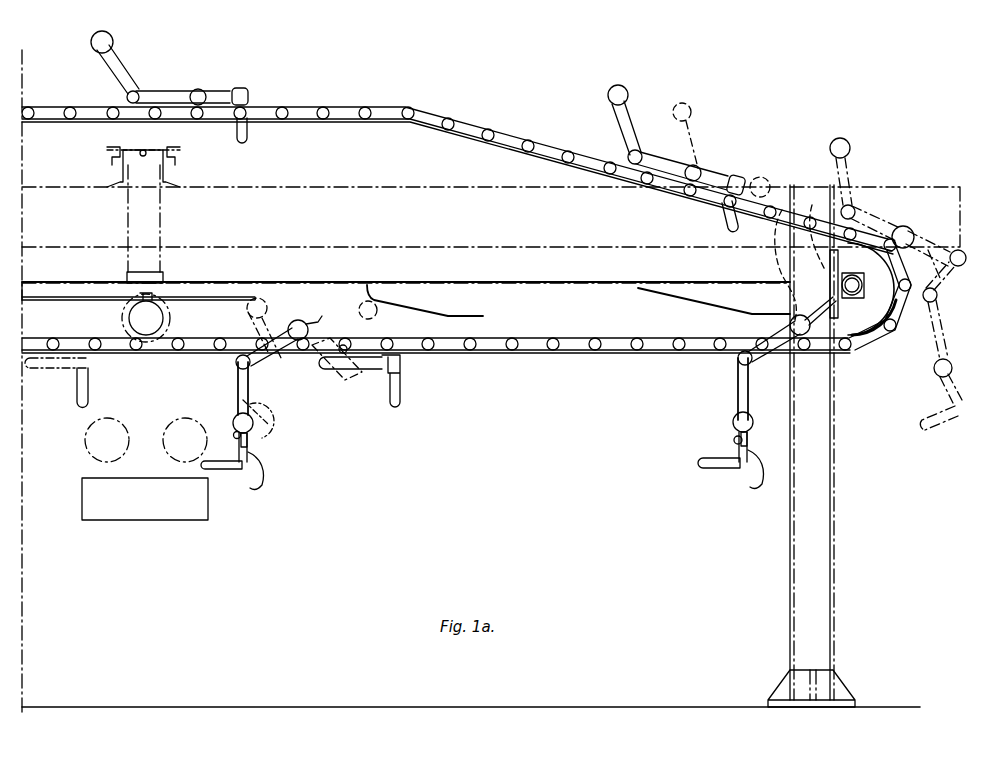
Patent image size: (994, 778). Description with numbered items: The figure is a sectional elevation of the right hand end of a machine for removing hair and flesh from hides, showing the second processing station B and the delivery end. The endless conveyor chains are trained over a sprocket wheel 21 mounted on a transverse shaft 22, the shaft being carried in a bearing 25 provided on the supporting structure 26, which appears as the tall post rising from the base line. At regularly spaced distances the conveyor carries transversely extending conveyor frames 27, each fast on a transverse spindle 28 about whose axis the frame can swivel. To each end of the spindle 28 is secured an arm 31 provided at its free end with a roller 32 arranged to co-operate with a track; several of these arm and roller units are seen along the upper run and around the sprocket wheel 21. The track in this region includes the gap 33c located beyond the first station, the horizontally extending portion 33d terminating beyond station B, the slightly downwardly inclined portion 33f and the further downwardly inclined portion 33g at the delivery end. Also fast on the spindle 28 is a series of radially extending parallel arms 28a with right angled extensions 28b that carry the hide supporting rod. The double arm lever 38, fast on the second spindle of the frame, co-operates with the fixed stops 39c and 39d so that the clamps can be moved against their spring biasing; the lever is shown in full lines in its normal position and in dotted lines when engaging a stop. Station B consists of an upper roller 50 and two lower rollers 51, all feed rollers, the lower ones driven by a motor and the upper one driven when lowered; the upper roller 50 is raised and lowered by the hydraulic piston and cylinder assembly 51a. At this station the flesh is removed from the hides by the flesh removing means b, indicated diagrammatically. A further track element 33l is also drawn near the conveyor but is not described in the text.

The drum 21 is at (882, 330).
The bearing 22 is at (862, 285).
The pin link 25 is at (850, 296).
The post 26 is at (825, 386).
The pendulum arm 27 is at (110, 70).
The pivot 28 is at (238, 366).
The hanging arm 28a is at (252, 380).
The rod 28b is at (218, 468).
The link 31 is at (135, 84).
The ball weight 32 is at (114, 42).
The guide rail 33c is at (308, 292).
The guide rail 33d is at (95, 290).
The guide 33f is at (418, 302).
The guide 33g is at (685, 297).
The roller 33l is at (262, 317).
The catch 38 is at (251, 441).
The bracket 39c is at (345, 348).
The stop 39d is at (236, 433).
The roller 50 is at (170, 318).
The rollers 51 is at (167, 427).
The hanger 51a is at (150, 215).
The belt B is at (71, 327).
The box b is at (92, 508).